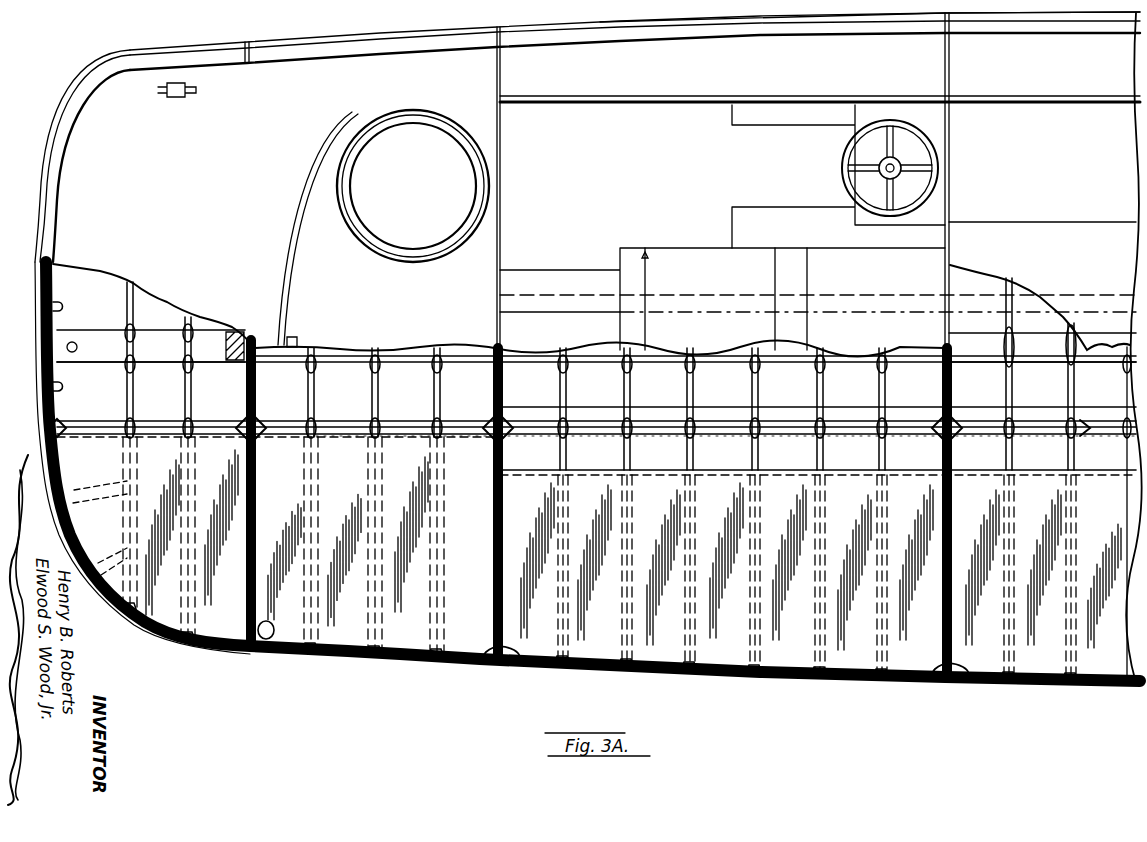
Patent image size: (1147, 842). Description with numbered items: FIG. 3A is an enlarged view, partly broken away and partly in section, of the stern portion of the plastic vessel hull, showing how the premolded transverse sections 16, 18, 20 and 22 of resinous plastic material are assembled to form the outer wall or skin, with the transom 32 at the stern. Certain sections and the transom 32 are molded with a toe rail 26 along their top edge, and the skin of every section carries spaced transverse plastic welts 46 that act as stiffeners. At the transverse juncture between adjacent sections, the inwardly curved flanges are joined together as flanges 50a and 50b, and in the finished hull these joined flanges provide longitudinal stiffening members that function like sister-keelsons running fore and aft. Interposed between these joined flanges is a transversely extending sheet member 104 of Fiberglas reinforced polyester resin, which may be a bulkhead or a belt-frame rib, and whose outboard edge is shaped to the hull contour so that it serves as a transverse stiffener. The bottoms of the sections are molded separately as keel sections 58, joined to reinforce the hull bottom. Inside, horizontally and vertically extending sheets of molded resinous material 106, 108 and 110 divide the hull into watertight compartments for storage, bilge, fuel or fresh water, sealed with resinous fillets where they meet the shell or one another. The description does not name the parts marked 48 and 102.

The transverse section 16 is at (1066, 69).
The transverse section 18 is at (708, 50).
The transverse section 20 is at (378, 62).
The transverse section 22 is at (137, 95).
The toe rail 26 is at (808, 33).
The transom 32 is at (58, 195).
The transverse plastic welts 46 is at (183, 388).
The base connection 48 is at (522, 662).
The joined flange 50a is at (58, 427).
The joined flange 50b is at (57, 432).
The keel section 58 is at (252, 420).
The horizontal beam 102 is at (697, 293).
The transversely extending sheet member 104 is at (503, 375).
The sheet of molded resinous material 106 is at (373, 495).
The sheet of molded resinous material 108 is at (172, 603).
The sheet of molded resinous material 110 is at (340, 425).